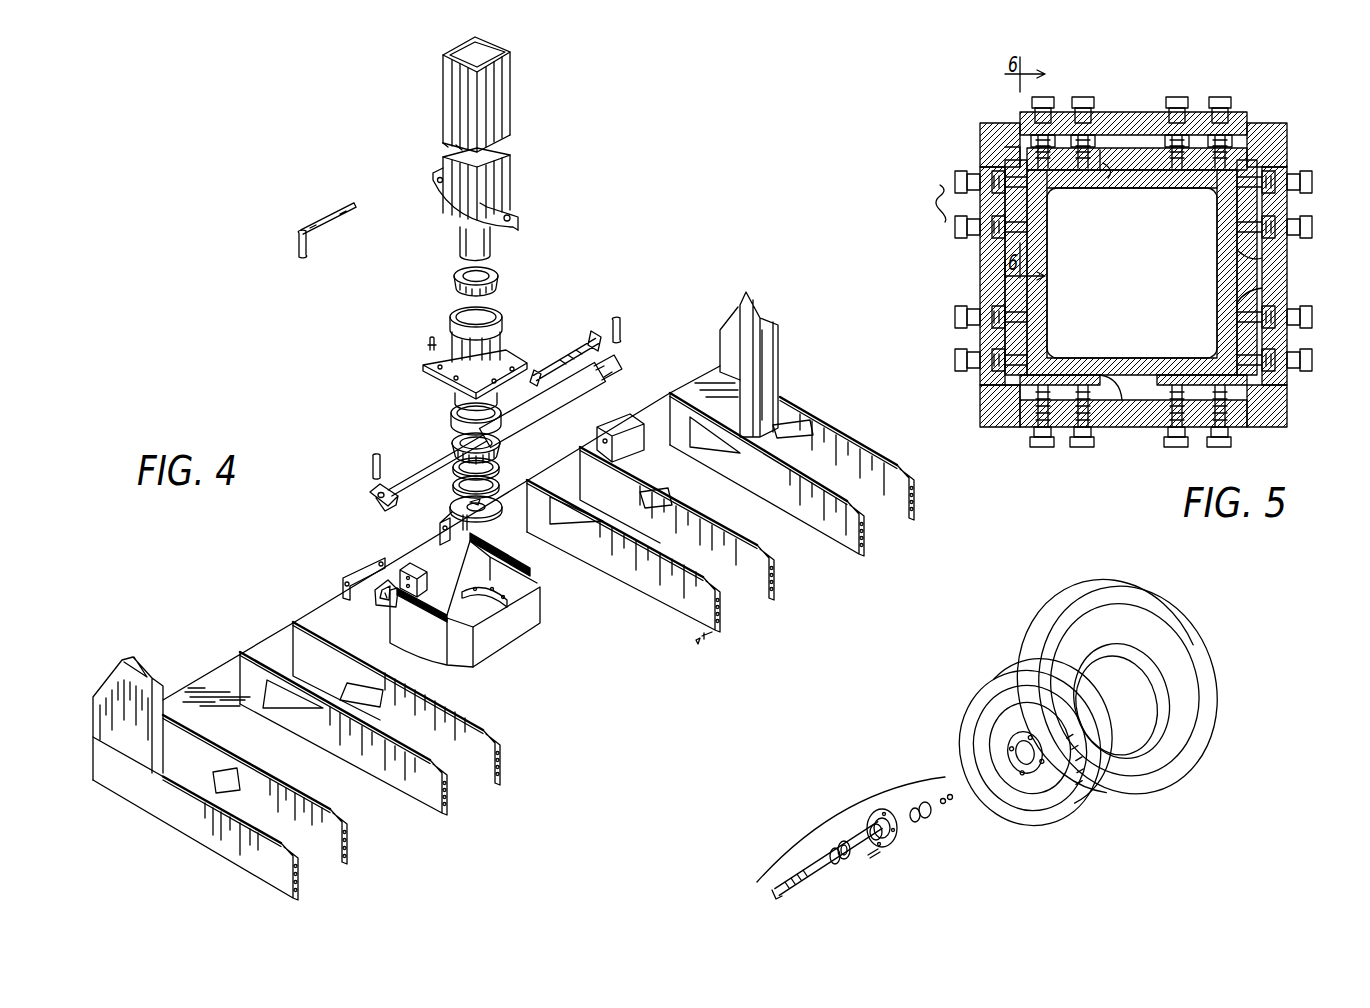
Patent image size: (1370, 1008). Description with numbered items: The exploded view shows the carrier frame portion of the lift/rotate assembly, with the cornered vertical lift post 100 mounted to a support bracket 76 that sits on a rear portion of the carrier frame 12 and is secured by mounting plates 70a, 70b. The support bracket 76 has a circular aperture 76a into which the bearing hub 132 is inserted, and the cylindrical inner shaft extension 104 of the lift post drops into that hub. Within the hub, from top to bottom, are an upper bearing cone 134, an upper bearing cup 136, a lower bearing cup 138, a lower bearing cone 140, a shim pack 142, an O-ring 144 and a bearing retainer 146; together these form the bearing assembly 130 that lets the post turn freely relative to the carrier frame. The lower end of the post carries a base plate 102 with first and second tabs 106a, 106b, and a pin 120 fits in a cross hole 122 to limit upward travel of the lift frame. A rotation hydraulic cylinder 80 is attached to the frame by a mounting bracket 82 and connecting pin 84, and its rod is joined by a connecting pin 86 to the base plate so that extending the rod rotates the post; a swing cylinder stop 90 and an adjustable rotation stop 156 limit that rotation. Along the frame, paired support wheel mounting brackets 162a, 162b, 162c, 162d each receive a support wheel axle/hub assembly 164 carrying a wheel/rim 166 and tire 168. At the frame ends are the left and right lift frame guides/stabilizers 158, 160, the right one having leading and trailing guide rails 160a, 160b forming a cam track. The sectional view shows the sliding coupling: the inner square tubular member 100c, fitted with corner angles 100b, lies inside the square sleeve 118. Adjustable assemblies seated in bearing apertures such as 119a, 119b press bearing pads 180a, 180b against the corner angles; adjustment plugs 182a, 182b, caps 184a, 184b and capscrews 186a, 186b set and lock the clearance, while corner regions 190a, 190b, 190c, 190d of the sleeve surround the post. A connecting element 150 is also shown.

In FIG. 4, the carrier frame 12 is at (221, 677).
In FIG. 4, the mounting plate 70a is at (343, 584).
In FIG. 4, the mounting plate 70b is at (439, 531).
In FIG. 4, the support bracket 76 is at (527, 633).
In FIG. 4, the circular aperture 76a is at (503, 607).
In FIG. 4, the rotation hydraulic cylinder 80 is at (618, 391).
In FIG. 4, the mounting bracket 82 is at (630, 427).
In FIG. 4, the connecting pin 84 is at (625, 331).
In FIG. 4, the connecting pin 86 is at (369, 467).
In FIG. 4, the swing cylinder stop 90 is at (386, 600).
In FIG. 4, the vertical lift post 100 is at (524, 107).
In FIG. 5, the vertical lift post 100 is at (973, 281).
In FIG. 5, the corner angle 100b is at (1103, 163).
In FIG. 5, the inner square tubular member 100c is at (1129, 189).
In FIG. 4, the base plate 102 is at (519, 231).
In FIG. 4, the cylindrical inner shaft extension 104 is at (464, 244).
In FIG. 4, the first tab 106a is at (450, 150).
In FIG. 4, the second tab 106b is at (515, 212).
In FIG. 5, the sleeve 118 is at (980, 402).
In FIG. 5, the bearing aperture 119a is at (980, 240).
In FIG. 5, the spacer 119b is at (1024, 126).
In FIG. 4, the pin 120 is at (327, 222).
In FIG. 4, the cross hole 122 is at (456, 140).
In FIG. 4, the bearing assembly 130 is at (333, 341).
In FIG. 4, the bearing hub 132 is at (430, 343).
In FIG. 4, the upper bearing cone 134 is at (498, 278).
In FIG. 4, the upper bearing cup 136 is at (451, 318).
In FIG. 4, the lower bearing cup 138 is at (451, 416).
In FIG. 4, the lower bearing cone 140 is at (452, 443).
In FIG. 4, the shim pack 142 is at (501, 461).
In FIG. 4, the O-ring 144 is at (503, 479).
In FIG. 4, the bearing retainer 146 is at (487, 507).
In FIG. 4, the bolt 150 is at (578, 343).
In FIG. 4, the adjustable rotation stop 156 is at (403, 568).
In FIG. 4, the left lift frame guide/stabilizer 158 is at (102, 668).
In FIG. 4, the right lift frame guide/stabilizer 160 is at (789, 311).
In FIG. 4, the leading guide rail 160a is at (748, 297).
In FIG. 4, the trailing guide rail 160b is at (770, 348).
In FIG. 4, the support wheel mounting bracket 162a is at (297, 905).
In FIG. 4, the support wheel mounting bracket 162b is at (446, 820).
In FIG. 4, the support wheel mounting bracket 162c is at (722, 634).
In FIG. 4, the support wheel mounting bracket 162d is at (865, 562).
In FIG. 4, the support wheel axle/hub assembly 164 is at (840, 820).
In FIG. 4, the wheel/rim 166 is at (1033, 817).
In FIG. 4, the tire 168 is at (1155, 784).
In FIG. 5, the bearing pad 180a is at (1019, 222).
In FIG. 5, the bearing pad 180b is at (1056, 160).
In FIG. 5, the adjustment plug 182a is at (977, 258).
In FIG. 5, the adjustment plug 182b is at (1100, 158).
In FIG. 5, the cap 184a is at (972, 162).
In FIG. 5, the cap 184b is at (1024, 126).
In FIG. 5, the capscrews 186a is at (940, 202).
In FIG. 5, the capscrews 186b is at (1038, 98).
In FIG. 5, the corner block 190a is at (966, 110).
In FIG. 5, the corner block 190b is at (1301, 118).
In FIG. 5, the corner block 190c is at (1304, 426).
In FIG. 5, the corner block 190d is at (971, 436).